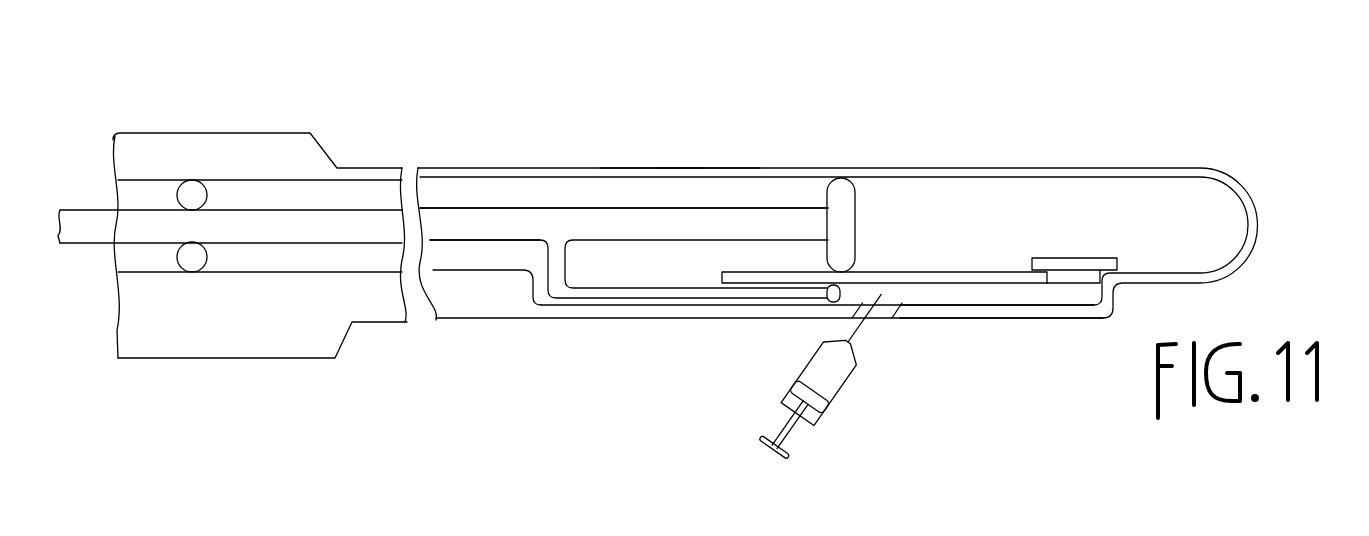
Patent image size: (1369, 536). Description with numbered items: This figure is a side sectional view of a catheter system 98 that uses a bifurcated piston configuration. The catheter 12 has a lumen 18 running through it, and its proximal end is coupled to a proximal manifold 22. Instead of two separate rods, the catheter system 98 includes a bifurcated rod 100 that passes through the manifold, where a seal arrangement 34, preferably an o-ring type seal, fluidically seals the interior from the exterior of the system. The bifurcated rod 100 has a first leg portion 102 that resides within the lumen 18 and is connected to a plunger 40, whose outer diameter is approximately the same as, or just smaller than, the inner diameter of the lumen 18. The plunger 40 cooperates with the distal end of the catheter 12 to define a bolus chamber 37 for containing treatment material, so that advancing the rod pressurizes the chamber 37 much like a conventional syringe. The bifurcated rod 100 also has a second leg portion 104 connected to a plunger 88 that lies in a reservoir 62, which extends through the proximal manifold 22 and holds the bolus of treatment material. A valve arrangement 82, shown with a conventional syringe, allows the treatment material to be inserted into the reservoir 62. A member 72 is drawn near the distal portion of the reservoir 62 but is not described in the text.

The catheter 12 is at (695, 164).
The lumen 18 is at (888, 174).
The proximal manifold 22 is at (275, 333).
The seal arrangement 34 is at (192, 178).
The bolus chamber 37 is at (988, 188).
The plunger 40 is at (842, 192).
The reservoir 62 is at (1022, 292).
The septum 72 is at (1077, 258).
The introduction valve 82 is at (880, 317).
The plunger 88 is at (822, 300).
The catheter system 98 is at (647, 162).
The bifurcated rod 100 is at (505, 208).
The first leg portion 102 is at (760, 223).
The second leg portion 104 is at (622, 292).